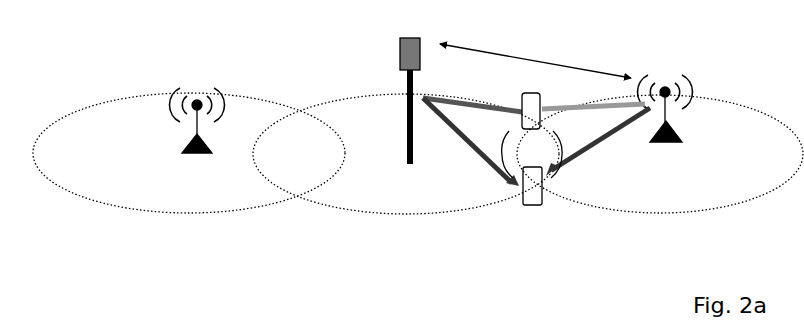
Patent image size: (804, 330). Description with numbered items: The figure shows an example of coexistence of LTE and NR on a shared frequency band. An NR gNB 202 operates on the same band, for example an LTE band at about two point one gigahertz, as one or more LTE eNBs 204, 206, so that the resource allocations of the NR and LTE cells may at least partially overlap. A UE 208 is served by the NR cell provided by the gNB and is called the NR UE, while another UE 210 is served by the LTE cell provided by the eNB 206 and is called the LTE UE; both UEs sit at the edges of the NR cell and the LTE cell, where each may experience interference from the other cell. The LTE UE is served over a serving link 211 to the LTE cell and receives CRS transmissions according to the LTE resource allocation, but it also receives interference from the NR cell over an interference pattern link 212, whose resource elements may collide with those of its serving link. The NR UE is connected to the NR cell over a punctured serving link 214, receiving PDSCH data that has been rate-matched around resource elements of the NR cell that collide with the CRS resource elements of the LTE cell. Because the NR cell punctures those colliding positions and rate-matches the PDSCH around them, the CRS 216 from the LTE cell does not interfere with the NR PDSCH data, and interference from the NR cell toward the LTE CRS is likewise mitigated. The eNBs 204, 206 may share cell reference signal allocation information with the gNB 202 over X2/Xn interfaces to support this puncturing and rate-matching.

The NR gNB 202 is at (398, 66).
The LTE eNB 204 is at (182, 151).
The LTE eNB 206 is at (686, 146).
The UE 208 is at (529, 92).
The UE 210 is at (535, 208).
The serving link 211 is at (579, 161).
The interference pattern link 212 is at (462, 148).
The punctured serving link 214 is at (444, 96).
The CRS 216 is at (591, 100).